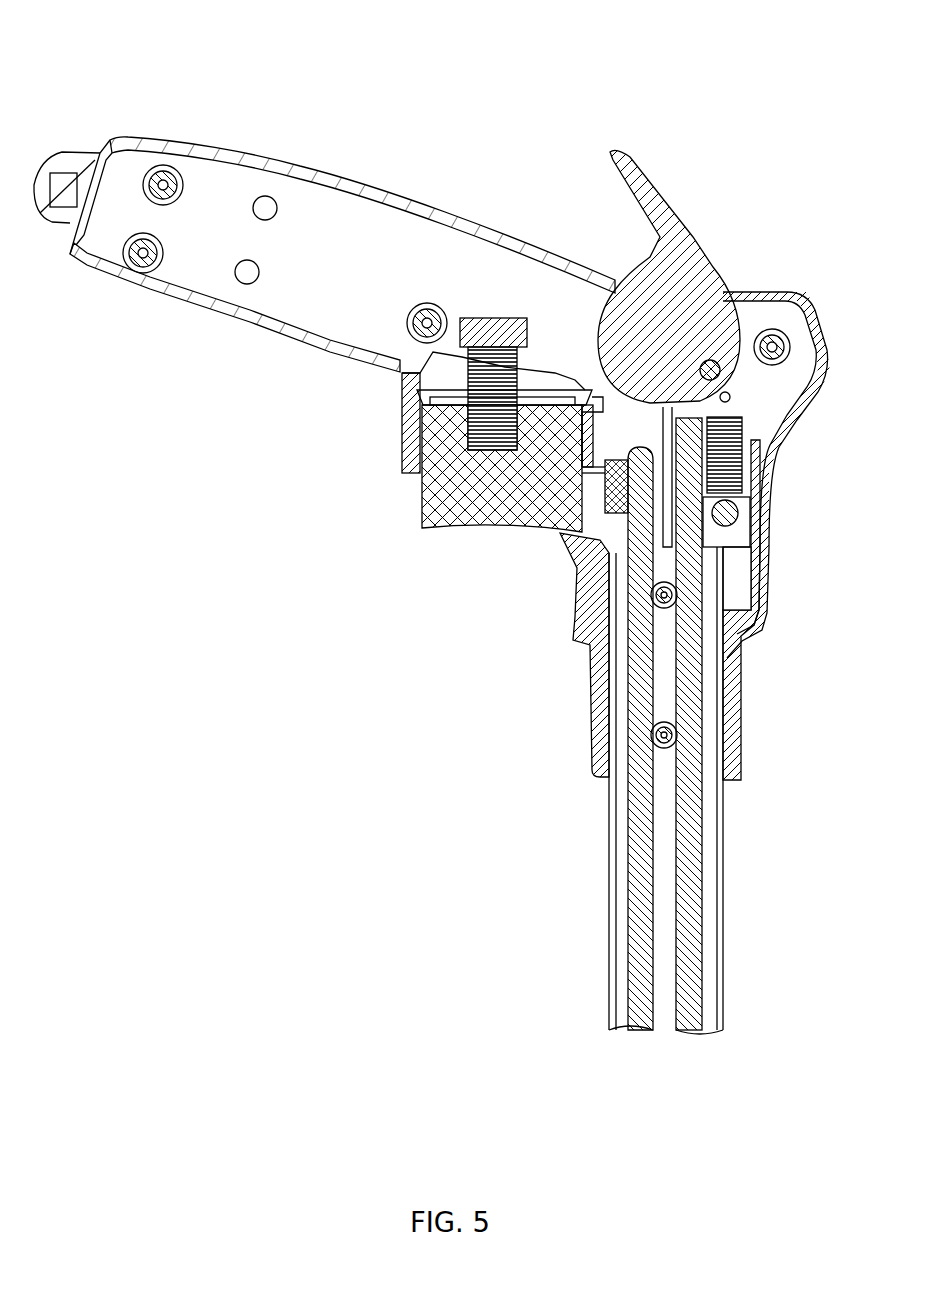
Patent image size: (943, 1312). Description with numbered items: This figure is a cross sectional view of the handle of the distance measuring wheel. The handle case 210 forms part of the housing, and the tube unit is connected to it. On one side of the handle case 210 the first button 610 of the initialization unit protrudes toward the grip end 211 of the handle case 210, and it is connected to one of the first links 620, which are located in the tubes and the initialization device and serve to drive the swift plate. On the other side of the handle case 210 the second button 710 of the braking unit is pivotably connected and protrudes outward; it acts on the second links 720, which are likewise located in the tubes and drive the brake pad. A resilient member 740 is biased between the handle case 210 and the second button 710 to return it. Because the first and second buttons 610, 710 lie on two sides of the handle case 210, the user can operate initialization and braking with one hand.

The handle case 210 is at (100, 150).
The grip end 211 is at (338, 152).
The first button 610 is at (658, 202).
The first link 620 is at (690, 840).
The second button 710 is at (447, 505).
The second link 720 is at (640, 838).
The resilient member 740 is at (488, 318).